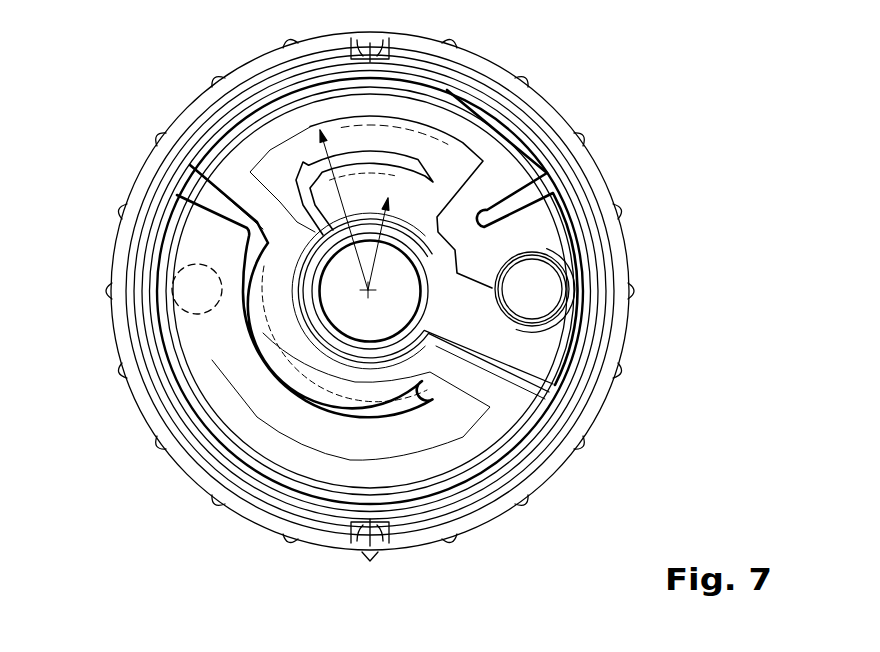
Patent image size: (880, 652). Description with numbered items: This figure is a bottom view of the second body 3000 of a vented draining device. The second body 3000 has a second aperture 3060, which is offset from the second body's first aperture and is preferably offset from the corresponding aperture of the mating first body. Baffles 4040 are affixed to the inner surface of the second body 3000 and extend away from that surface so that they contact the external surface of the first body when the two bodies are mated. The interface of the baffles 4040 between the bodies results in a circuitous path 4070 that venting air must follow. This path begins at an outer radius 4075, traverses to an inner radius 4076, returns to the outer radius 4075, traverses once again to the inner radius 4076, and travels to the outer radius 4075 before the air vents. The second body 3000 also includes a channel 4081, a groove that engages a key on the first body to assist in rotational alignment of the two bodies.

The second body 3000 is at (668, 148).
The second aperture of the second body 3060 is at (178, 303).
The baffles 4040 is at (555, 385).
The circuitous path 4070 is at (453, 127).
The outer radius 4075 is at (417, 268).
The inner radius 4076 is at (417, 268).
The channel 4081 is at (372, 561).